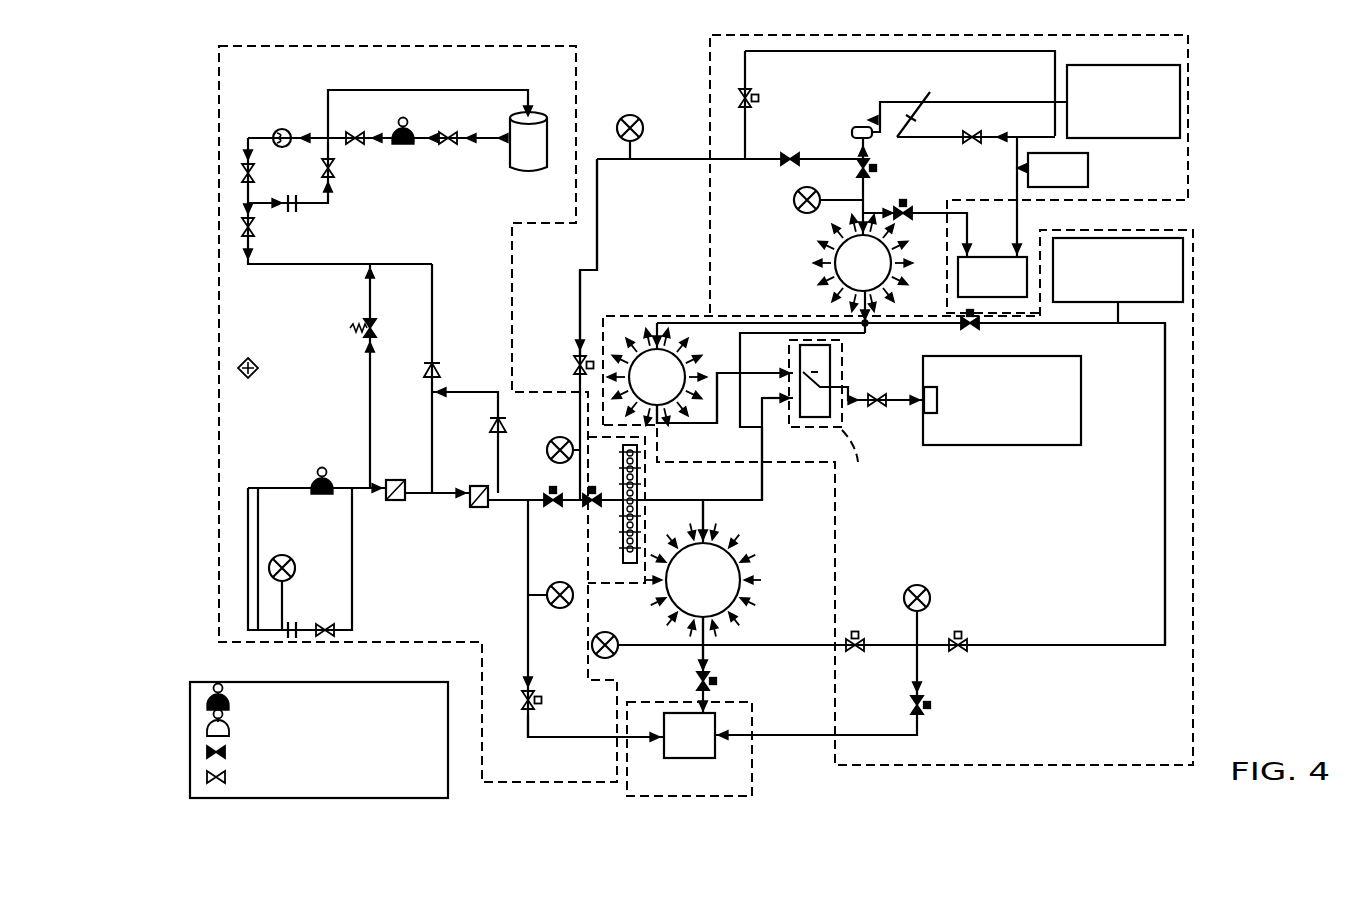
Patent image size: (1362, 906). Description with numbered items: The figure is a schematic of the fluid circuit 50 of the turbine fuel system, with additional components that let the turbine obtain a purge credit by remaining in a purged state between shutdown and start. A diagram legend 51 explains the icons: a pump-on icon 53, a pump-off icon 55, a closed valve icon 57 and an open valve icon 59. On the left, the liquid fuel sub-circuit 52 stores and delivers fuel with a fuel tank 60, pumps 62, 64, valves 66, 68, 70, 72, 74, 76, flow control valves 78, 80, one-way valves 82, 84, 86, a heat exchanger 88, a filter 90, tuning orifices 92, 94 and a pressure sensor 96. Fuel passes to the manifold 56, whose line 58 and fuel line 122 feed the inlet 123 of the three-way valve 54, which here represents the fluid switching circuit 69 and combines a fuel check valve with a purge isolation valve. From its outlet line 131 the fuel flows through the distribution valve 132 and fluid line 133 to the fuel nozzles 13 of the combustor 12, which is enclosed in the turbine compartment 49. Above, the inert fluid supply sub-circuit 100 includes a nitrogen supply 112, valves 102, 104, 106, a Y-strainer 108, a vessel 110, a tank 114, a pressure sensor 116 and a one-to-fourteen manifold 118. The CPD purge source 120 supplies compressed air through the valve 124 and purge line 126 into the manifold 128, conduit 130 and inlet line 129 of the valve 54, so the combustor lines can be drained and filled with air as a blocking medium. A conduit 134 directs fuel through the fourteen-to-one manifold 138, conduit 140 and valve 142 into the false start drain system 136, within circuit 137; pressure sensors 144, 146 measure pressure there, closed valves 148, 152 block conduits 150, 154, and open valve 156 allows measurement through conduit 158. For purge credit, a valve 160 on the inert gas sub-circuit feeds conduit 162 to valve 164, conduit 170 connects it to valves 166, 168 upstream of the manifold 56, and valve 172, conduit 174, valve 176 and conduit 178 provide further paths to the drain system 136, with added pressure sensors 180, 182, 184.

The combustor 12 is at (992, 440).
The fuel nozzles 13 is at (930, 388).
The turbine compartment 49 is at (1194, 490).
The fluid circuit 50 is at (664, 58).
The diagram legend 51 is at (321, 682).
The liquid fuel sub-circuit 52 is at (548, 46).
The pump-on icon 53 is at (340, 703).
The three-way valve 54 is at (828, 428).
The pump-off icon 55 is at (338, 728).
The 14-line manifold 56 is at (618, 476).
The closed valve icon 57 is at (388, 753).
The manifold fuel line 58 is at (670, 500).
The open valve icon 59 is at (366, 778).
The fuel tank 60 is at (528, 176).
The pump 62 is at (402, 120).
The pump 64 is at (322, 467).
The valve 66 is at (448, 146).
The valve 68 is at (358, 146).
The fluid switching circuit 69 is at (856, 459).
The valve 70 is at (335, 176).
The valve 72 is at (243, 168).
The valve 74 is at (255, 226).
The valve 76 is at (374, 322).
The flow control valve 78 is at (396, 480).
The flow control valve 80 is at (478, 486).
The one-way valve 82 is at (441, 369).
The one-way valve 84 is at (488, 423).
The one-way valve 86 is at (330, 624).
The heat exchanger 88 is at (280, 129).
The filter 90 is at (256, 364).
The tuning orifice 92 is at (297, 211).
The tuning orifice 94 is at (294, 624).
The pressure sensor 96 is at (295, 571).
The inert fluid supply sub-circuit 100 is at (1170, 204).
The valve 102 is at (879, 168).
The valve 104 is at (905, 206).
The valve 106 is at (956, 148).
The Y-strainer 108 is at (930, 93).
The vessel 110 is at (853, 127).
The inert fluid supply 112 is at (1120, 66).
The fuel tank 114 is at (1089, 172).
The pressure sensor 116 is at (799, 212).
The manifold 118 is at (893, 271).
The CPD purge source 120 is at (1184, 272).
The fuel line 122 is at (769, 500).
The inlet 123 is at (783, 428).
The valve 124 is at (972, 334).
The purge line 126 is at (684, 316).
The manifold 128 is at (684, 361).
The inlet line 129 is at (793, 373).
The conduit 130 is at (685, 424).
The outlet line 131 is at (840, 367).
The distribution valve 132 is at (877, 394).
The fluid line 133 is at (904, 404).
The conduit 134 is at (706, 513).
The false start drain system 136 is at (690, 760).
The circuit 137 is at (694, 797).
The manifold 138 is at (745, 571).
The conduit 140 is at (707, 669).
The valve 142 is at (716, 683).
The pressure sensor 144 is at (605, 632).
The pressure sensor 146 is at (930, 594).
The valve 148 is at (961, 634).
The conduit 150 is at (1165, 517).
The valve 152 is at (855, 634).
The conduit 154 is at (792, 645).
The valve 156 is at (926, 709).
The conduit 158 is at (804, 738).
The valve 160 is at (790, 152).
The conduit 162 is at (683, 164).
The valve 164 is at (578, 350).
The valve 166 is at (553, 508).
The valve 168 is at (592, 508).
The conduit 170 is at (578, 402).
The valve 172 is at (752, 98).
The conduit 174 is at (880, 52).
The valve 176 is at (542, 700).
The conduit 178 is at (574, 737).
The pressure sensor 180 is at (556, 437).
The pressure sensor 182 is at (628, 114).
The pressure sensor 184 is at (560, 609).